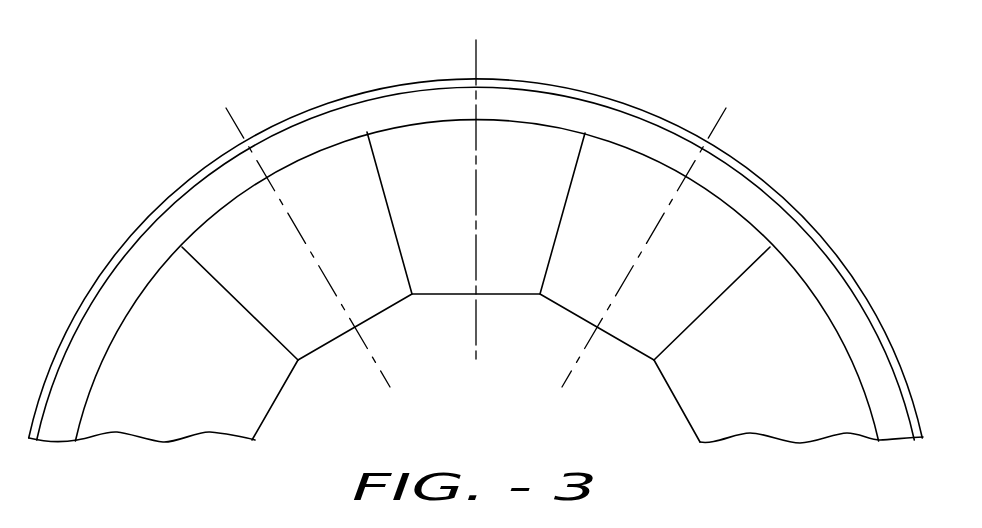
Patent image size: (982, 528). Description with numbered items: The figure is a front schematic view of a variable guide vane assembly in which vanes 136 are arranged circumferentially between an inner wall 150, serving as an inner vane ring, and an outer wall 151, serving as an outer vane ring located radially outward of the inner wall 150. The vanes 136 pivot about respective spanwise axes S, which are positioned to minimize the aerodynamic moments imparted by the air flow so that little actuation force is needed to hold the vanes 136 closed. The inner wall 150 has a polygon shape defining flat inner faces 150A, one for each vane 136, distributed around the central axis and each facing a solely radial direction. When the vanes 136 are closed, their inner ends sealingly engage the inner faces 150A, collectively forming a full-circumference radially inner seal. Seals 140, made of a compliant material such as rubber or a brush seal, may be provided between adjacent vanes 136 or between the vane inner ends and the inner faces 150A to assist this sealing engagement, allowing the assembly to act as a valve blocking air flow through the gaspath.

The vanes 136 is at (430, 171).
The seals 140 is at (277, 318).
The inner wall 150 is at (673, 418).
The inner faces 150A is at (270, 415).
The outer wall 151 is at (813, 260).
The spanwise axes S is at (478, 52).